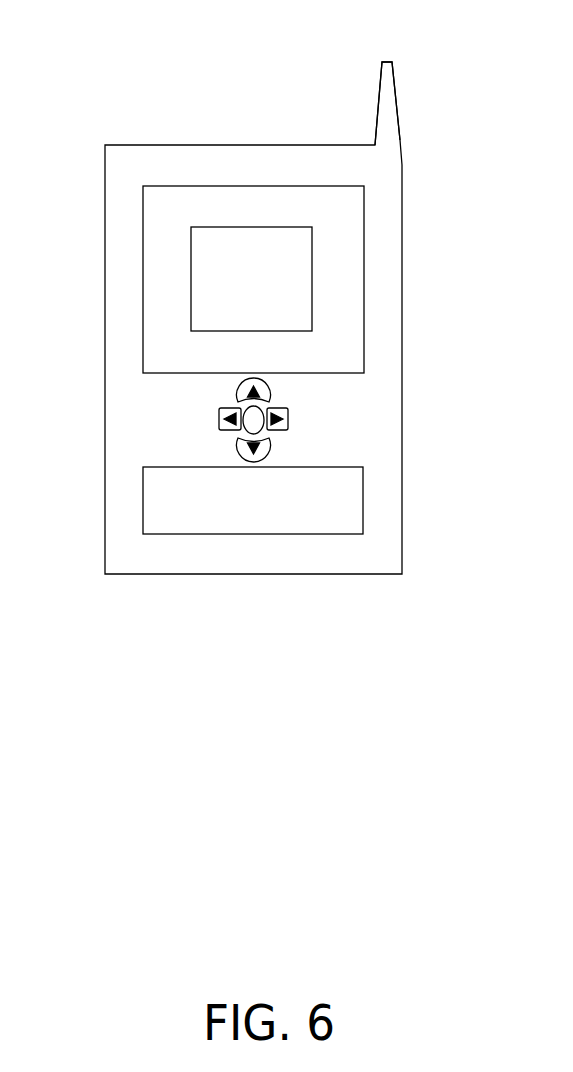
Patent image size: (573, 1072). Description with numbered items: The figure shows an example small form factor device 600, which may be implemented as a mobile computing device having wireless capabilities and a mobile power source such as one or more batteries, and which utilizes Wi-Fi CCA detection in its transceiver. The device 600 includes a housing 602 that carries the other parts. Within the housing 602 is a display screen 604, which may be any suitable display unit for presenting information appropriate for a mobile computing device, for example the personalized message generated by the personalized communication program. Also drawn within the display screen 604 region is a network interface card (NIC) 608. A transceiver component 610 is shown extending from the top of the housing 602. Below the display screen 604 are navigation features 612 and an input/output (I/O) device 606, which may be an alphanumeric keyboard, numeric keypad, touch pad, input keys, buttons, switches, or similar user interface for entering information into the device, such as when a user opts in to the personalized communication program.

The small form factor device 600 is at (120, 79).
The housing 602 is at (406, 362).
The display screen 604 is at (368, 205).
The input/output (I/O) device 606 is at (373, 502).
The network interface card (NIC) 608 is at (319, 295).
The transceiver component 610 is at (376, 100).
The navigation features 612 is at (292, 420).